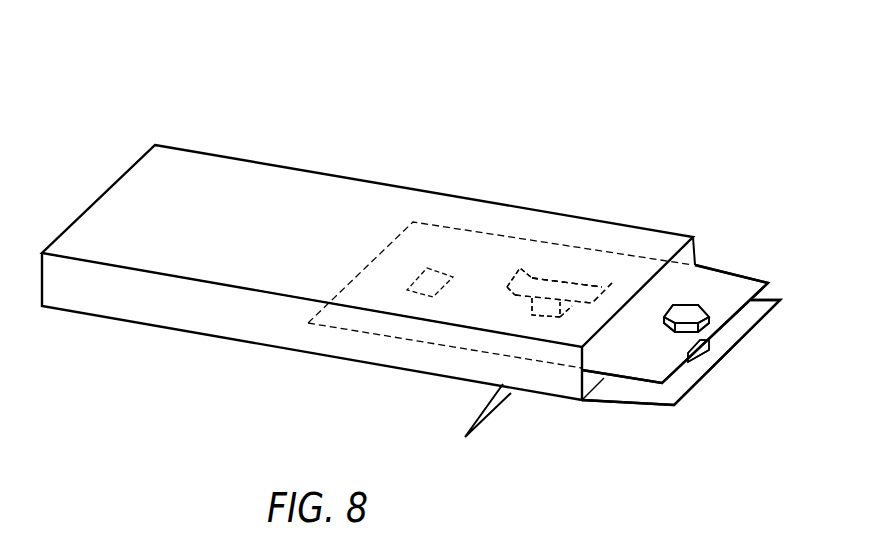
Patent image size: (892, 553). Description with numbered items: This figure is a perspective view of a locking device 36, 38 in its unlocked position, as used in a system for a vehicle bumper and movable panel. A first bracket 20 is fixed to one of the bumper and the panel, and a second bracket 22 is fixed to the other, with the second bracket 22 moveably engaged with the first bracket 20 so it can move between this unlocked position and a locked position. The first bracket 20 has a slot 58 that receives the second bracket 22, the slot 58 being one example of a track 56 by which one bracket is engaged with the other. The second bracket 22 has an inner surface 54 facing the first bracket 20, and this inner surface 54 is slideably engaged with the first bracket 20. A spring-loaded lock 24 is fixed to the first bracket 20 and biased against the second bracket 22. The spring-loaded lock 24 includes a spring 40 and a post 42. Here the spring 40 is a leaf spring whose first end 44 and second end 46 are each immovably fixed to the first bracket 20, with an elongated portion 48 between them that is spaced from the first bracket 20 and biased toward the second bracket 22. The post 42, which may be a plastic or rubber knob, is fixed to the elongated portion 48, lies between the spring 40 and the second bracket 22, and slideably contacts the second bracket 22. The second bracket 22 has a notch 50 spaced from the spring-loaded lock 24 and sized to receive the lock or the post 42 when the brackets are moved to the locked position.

The first bracket 20 is at (230, 188).
The second bracket 22 is at (720, 300).
The spring-loaded lock 24 is at (575, 274).
The first locking device 36 is at (649, 64).
The second locking device 38 is at (649, 64).
The spring 40 is at (555, 290).
The post 42 is at (540, 317).
The first end 44 is at (520, 277).
The second end 46 is at (520, 277).
The elongated portion 48 is at (555, 290).
The notch 50 is at (430, 272).
The inner surface 54 is at (703, 285).
The track 56 is at (690, 261).
The slot 58 is at (690, 261).